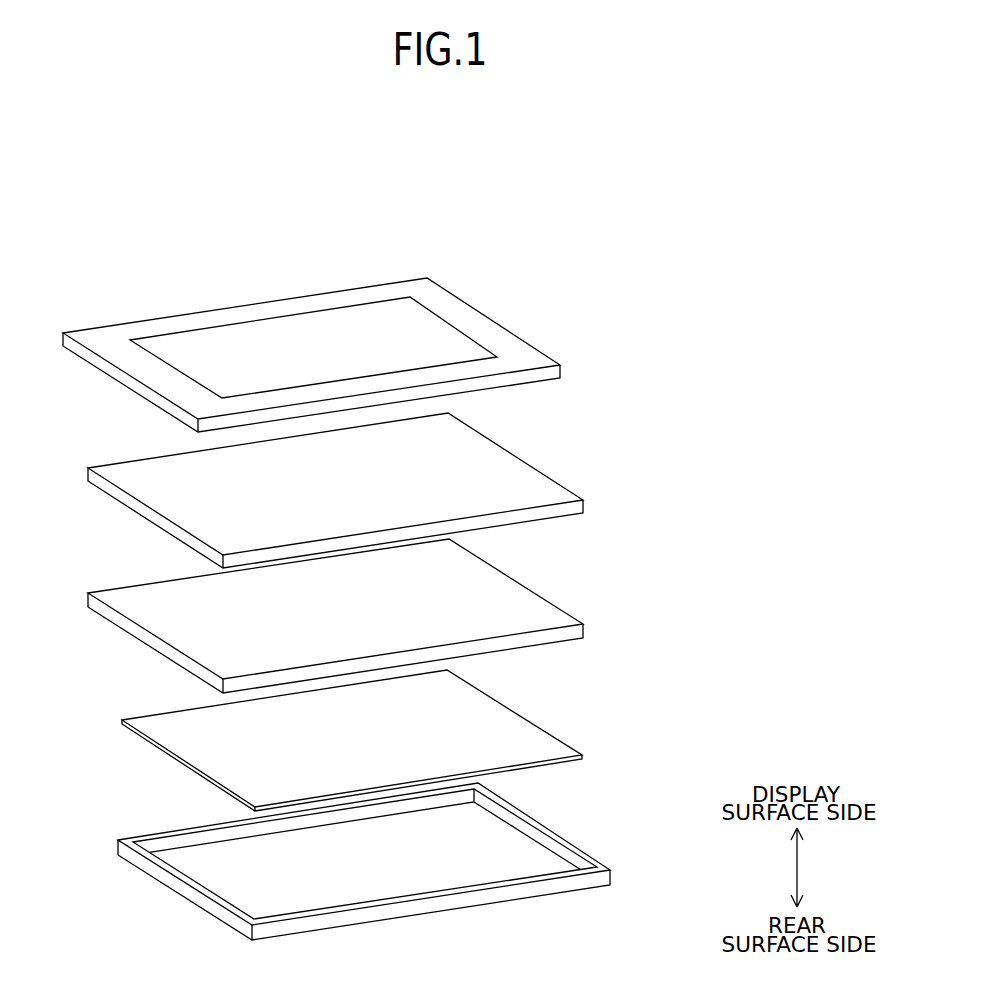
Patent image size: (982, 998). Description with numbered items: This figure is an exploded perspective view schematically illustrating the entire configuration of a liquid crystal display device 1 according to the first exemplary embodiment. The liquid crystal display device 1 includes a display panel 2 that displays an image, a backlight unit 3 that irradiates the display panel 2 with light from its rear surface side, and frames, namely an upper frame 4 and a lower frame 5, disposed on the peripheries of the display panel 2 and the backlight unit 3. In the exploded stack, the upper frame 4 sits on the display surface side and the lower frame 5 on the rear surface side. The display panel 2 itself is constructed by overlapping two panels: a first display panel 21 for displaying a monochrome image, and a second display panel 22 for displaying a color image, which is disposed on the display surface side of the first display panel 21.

The liquid crystal display device 1 is at (205, 252).
The display panel 2 is at (406, 553).
The backlight unit 3 is at (583, 760).
The upper frame 4 is at (563, 373).
The lower frame 5 is at (613, 872).
The first display panel 21 is at (372, 616).
The second display panel 22 is at (571, 489).